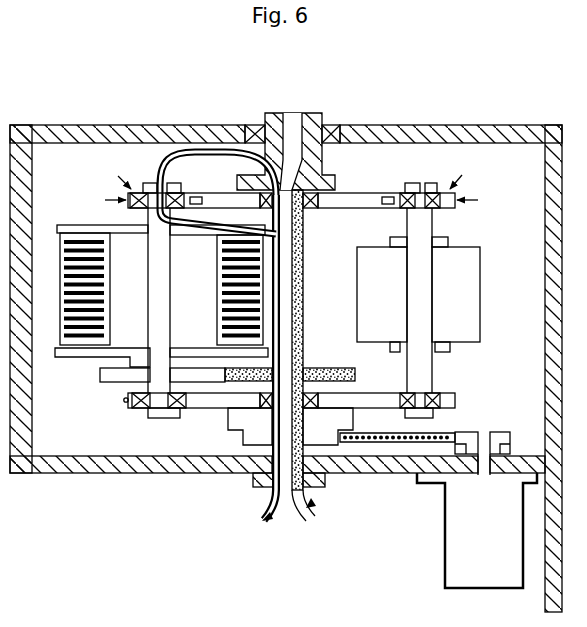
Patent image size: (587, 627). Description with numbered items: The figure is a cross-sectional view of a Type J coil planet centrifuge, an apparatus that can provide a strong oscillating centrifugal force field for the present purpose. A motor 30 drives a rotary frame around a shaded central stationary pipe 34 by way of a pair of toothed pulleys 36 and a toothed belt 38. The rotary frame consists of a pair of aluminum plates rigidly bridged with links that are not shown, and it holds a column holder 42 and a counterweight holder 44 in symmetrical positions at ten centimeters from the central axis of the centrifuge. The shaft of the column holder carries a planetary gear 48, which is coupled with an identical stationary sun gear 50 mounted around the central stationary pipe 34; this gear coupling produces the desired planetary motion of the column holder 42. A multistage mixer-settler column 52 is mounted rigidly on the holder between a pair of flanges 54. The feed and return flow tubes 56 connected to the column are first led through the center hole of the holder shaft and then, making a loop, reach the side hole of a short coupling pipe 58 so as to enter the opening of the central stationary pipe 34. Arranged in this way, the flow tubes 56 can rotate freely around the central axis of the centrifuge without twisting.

The motor 30 is at (477, 530).
The central stationary pipe 34 is at (312, 228).
The toothed pulleys 36 is at (241, 439).
The toothed belt 38 is at (450, 433).
The column holder 42 is at (192, 291).
The counterweight holder 44 is at (418, 294).
The planetary gear 48 is at (121, 372).
The stationary sun gear 50 is at (347, 365).
The multistage mixer-settler column 52 is at (61, 296).
The flanges 54 is at (74, 222).
The feed and return flow tubes 56 is at (232, 346).
The short coupling pipe 58 is at (308, 170).